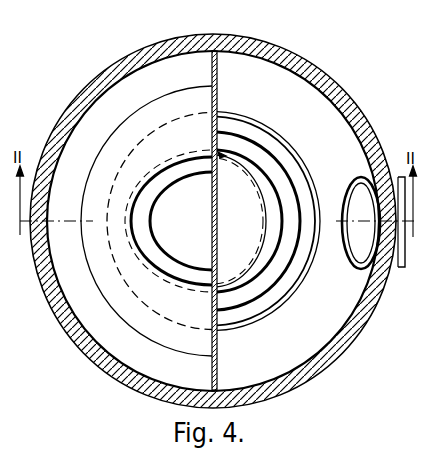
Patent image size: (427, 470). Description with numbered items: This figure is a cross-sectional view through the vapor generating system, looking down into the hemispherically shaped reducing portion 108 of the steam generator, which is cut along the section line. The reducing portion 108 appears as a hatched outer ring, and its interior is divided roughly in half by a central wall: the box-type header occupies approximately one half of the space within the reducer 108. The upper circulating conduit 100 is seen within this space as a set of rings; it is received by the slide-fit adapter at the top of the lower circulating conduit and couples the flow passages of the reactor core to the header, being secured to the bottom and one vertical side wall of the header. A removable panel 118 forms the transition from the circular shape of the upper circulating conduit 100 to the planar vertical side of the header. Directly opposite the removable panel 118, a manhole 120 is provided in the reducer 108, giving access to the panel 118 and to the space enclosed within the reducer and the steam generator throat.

The upper circulating conduit 100 is at (165, 175).
The reducing portion 108 is at (257, 41).
The removable panel 118 is at (217, 288).
The manhole 120 is at (398, 267).